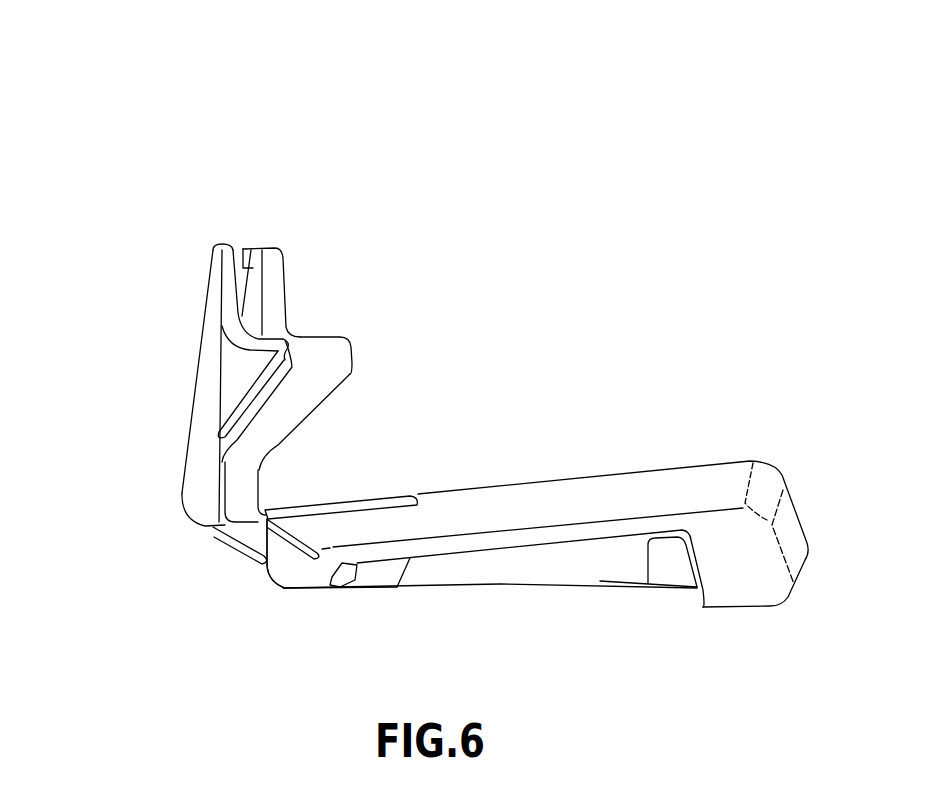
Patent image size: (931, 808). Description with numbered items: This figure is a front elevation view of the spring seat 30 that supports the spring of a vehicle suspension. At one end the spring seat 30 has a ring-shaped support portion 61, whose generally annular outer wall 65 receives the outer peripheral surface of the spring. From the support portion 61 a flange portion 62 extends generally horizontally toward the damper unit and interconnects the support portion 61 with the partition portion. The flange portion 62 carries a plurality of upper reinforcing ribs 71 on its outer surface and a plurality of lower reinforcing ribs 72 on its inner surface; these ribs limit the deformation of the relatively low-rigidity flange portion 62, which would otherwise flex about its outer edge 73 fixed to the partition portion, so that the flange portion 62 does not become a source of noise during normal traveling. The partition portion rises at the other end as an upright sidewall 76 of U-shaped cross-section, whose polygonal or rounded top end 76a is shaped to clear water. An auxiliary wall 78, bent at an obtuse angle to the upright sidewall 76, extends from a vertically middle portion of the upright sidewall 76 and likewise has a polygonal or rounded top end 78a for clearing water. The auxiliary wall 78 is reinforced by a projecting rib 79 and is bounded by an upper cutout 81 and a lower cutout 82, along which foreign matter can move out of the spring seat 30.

The spring seat 30 is at (157, 128).
The support portion 61 is at (562, 480).
The flange portion 62 is at (381, 503).
The outer wall 65 is at (590, 478).
The upper reinforcing ribs 71 is at (305, 507).
The lower reinforcing ribs 72 is at (250, 536).
The outer edge 73 is at (217, 528).
The upright sidewall 76 is at (228, 244).
The top end 76a is at (217, 252).
The auxiliary wall 78 is at (234, 382).
The top end 78a is at (265, 346).
The projecting rib 79 is at (226, 410).
The upper cutout 81 is at (243, 322).
The lower cutout 82 is at (258, 424).